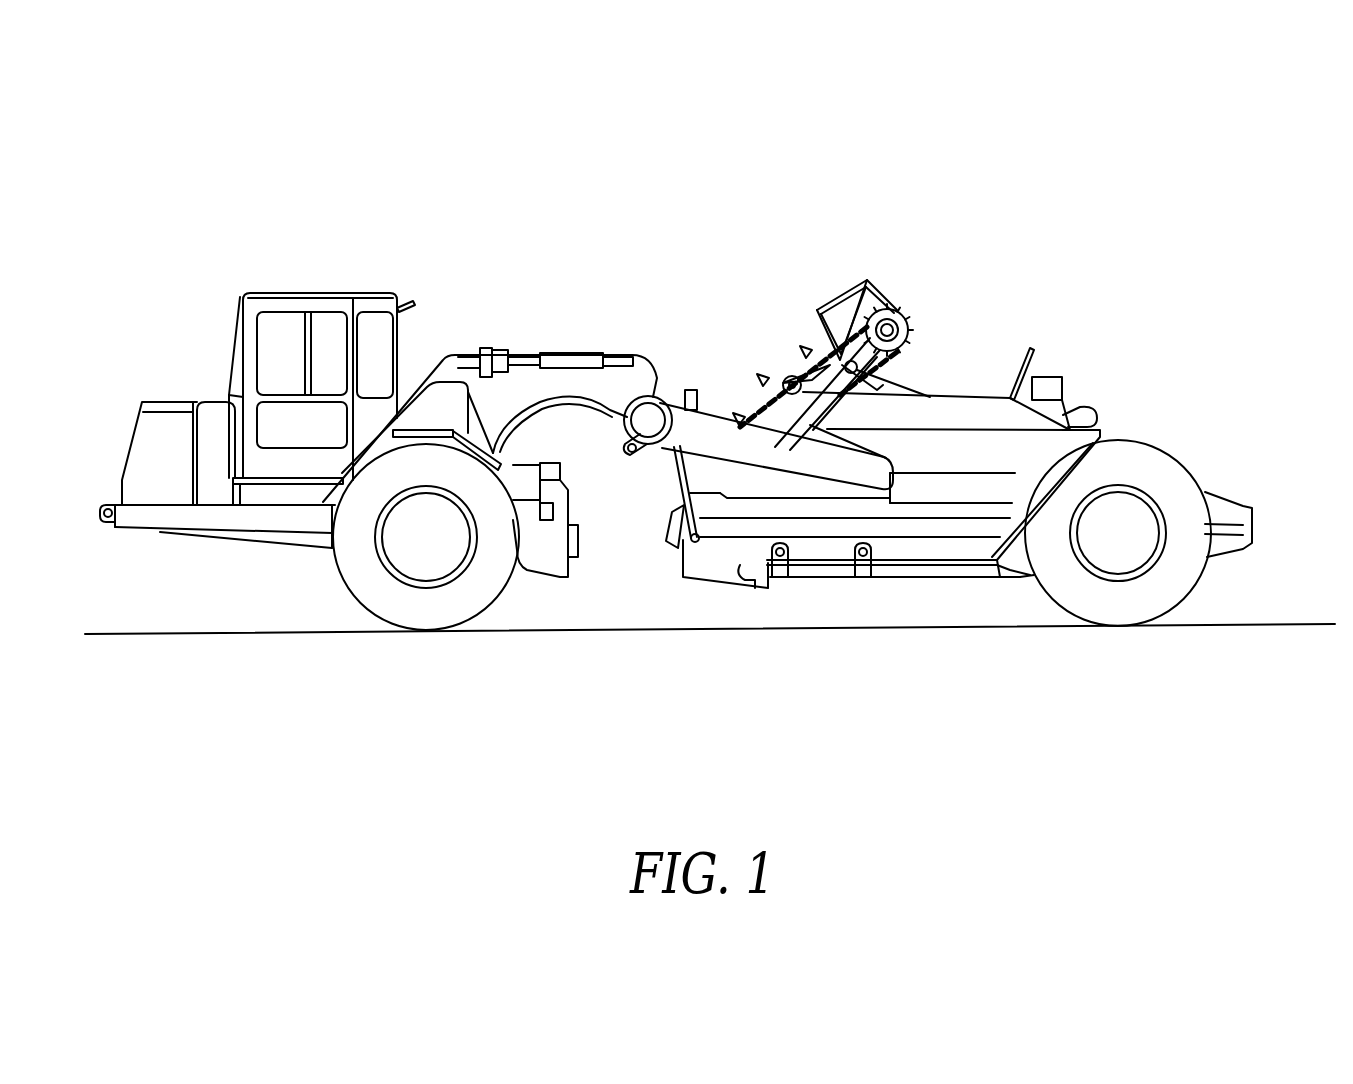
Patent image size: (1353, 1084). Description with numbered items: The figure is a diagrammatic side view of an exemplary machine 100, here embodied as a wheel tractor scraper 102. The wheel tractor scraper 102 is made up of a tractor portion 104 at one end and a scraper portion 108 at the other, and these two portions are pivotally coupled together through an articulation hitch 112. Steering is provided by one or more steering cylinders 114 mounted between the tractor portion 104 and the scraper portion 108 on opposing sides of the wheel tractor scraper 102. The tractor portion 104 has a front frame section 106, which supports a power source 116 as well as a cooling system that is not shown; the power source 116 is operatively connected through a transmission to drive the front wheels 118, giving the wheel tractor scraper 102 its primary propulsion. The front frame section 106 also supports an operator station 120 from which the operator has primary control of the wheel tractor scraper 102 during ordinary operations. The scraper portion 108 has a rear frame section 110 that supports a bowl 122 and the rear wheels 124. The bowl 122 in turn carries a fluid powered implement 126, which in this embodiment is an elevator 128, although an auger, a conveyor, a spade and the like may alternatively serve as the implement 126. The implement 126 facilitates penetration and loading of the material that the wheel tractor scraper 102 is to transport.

The machine 100 is at (1115, 168).
The wheel tractor scraper 102 is at (1235, 481).
The tractor portion 104 is at (205, 293).
The front frame section 106 is at (179, 525).
The scraper portion 108 is at (1128, 402).
The rear frame section 110 is at (822, 556).
The articulation hitch 112 is at (509, 322).
The steering cylinder 114 is at (573, 358).
The power source 116 is at (171, 396).
The front wheels 118 is at (490, 592).
The operator station 120 is at (298, 302).
The bowl 122 is at (963, 405).
The rear wheels 124 is at (1057, 592).
The fluid powered implement 126 is at (920, 268).
The elevator 128 is at (903, 322).